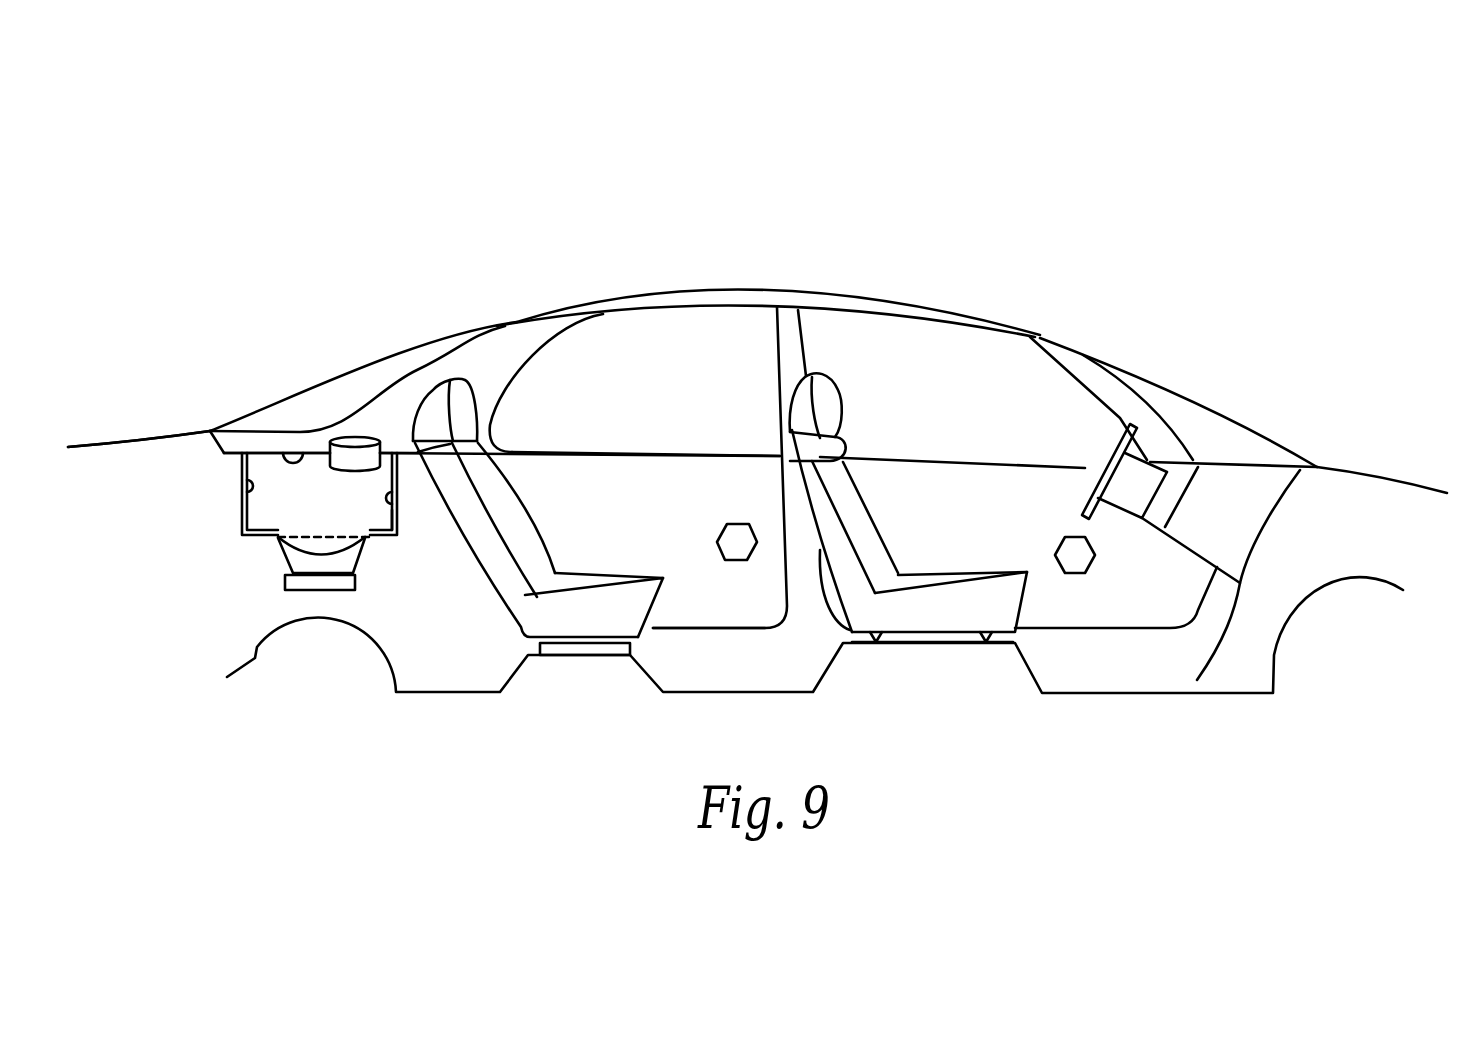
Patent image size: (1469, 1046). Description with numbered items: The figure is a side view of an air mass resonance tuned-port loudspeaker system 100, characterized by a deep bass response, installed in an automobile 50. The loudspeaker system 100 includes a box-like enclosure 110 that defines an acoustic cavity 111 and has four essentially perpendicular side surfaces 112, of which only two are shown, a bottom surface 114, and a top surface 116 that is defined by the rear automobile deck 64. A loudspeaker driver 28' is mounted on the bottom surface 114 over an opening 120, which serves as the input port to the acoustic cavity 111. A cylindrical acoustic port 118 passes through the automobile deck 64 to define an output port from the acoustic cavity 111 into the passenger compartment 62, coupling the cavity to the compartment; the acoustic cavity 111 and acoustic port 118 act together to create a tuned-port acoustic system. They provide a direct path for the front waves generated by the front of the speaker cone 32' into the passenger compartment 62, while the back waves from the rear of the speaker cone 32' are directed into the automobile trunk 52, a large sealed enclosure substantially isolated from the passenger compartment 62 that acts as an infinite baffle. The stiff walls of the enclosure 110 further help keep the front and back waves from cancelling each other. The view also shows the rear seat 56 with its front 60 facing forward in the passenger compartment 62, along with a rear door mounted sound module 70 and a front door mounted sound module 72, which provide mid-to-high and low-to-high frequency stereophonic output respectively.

The automobile 50 is at (776, 272).
The automobile trunk 52 is at (124, 518).
The rear seat 56 is at (531, 520).
The front of rear seat 60 is at (655, 617).
The passenger compartment 62 is at (678, 545).
The rear automobile deck 64 is at (272, 453).
The rear door mounted sound module 70 is at (738, 533).
The front door mounted sound module 72 is at (1068, 552).
The loudspeaker system 100 is at (229, 536).
The box-like enclosure 110 is at (243, 507).
The acoustic cavity 111 is at (318, 505).
The side surfaces 112 is at (247, 483).
The bottom surface 114 is at (392, 540).
The top surface 116 is at (311, 452).
The cylindrical acoustic port 118 is at (362, 443).
The opening 120 is at (305, 537).
The loudspeaker driver 28' is at (290, 576).
The speaker cone 32' is at (347, 578).